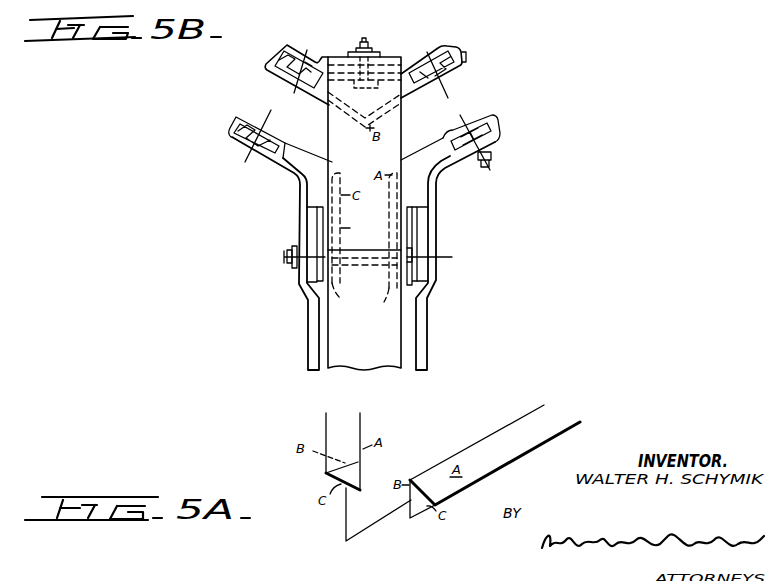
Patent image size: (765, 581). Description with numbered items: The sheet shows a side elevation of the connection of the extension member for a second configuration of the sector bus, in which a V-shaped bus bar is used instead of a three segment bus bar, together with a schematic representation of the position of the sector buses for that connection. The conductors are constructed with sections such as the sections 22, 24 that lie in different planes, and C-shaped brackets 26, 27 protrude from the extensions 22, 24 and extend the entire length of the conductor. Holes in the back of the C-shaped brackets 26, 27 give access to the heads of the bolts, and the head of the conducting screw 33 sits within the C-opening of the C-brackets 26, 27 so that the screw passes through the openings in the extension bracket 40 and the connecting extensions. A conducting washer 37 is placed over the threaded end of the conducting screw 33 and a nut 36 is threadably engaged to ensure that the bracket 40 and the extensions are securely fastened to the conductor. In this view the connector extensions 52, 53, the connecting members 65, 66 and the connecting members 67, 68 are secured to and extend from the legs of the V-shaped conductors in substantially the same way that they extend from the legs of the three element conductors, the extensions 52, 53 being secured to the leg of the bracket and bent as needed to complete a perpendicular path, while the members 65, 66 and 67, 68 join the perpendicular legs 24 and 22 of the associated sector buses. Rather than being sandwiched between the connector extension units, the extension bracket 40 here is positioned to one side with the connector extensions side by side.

The conductor section 22 is at (433, 150).
The conductor section 24 is at (290, 145).
The C-shaped bracket 26 is at (280, 58).
The C-shaped bracket 27 is at (238, 126).
The conducting screw 33 is at (287, 259).
The nut 36 is at (290, 266).
The conducting washer 37 is at (296, 270).
The extension bracket 40 is at (281, 195).
The connector extension 52 is at (376, 59).
The connector extension 53 is at (375, 89).
The connecting member 65 is at (419, 216).
The connecting member 66 is at (413, 230).
The connecting member 67 is at (320, 216).
The connecting member 68 is at (311, 228).